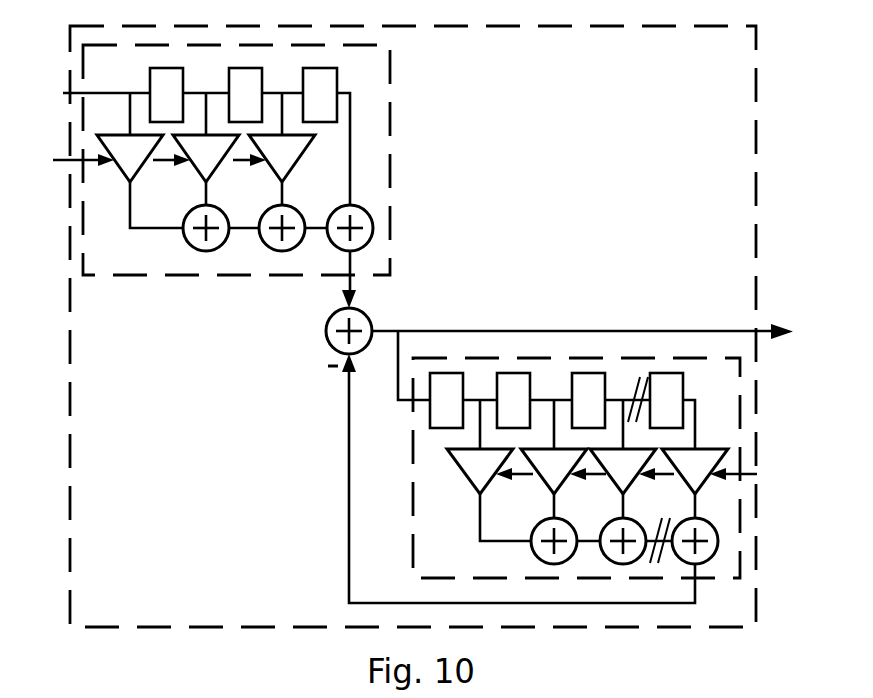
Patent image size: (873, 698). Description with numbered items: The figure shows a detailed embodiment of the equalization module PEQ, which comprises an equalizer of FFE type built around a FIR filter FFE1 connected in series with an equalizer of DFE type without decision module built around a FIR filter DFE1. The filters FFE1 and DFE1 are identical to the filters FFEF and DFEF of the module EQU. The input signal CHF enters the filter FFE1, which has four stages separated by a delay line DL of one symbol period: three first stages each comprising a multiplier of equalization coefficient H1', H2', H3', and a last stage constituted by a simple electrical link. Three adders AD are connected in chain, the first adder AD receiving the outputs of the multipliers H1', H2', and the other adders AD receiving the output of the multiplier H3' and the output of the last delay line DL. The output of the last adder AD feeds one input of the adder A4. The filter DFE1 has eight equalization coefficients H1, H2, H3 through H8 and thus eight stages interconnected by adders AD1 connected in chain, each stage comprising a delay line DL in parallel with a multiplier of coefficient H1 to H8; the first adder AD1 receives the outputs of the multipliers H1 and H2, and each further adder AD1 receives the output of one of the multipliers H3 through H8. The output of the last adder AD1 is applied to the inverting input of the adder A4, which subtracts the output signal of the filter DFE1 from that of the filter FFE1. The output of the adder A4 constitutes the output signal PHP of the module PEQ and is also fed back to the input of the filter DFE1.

The equalization module PEQ is at (413, 326).
The FIR filter of FFE type FFE1 is at (236, 160).
The FIR filter of DFE type DFE1 is at (576, 468).
The input signal CHF is at (181, 142).
The output signal PHP is at (609, 332).
The delay line DL is at (416, 248).
The equalization coefficient multiplier H1' is at (108, 158).
The equalization coefficient multiplier H2' is at (196, 158).
The equalization coefficient multiplier H3' is at (274, 158).
The adder AD is at (335, 212).
The adder A4 is at (333, 316).
The equalization coefficient multiplier H1 is at (490, 471).
The equalization coefficient multiplier H2 is at (563, 471).
The equalization coefficient multiplier H3 is at (632, 471).
The equalization coefficient multiplier H8 is at (773, 488).
The adder AD1 is at (679, 525).